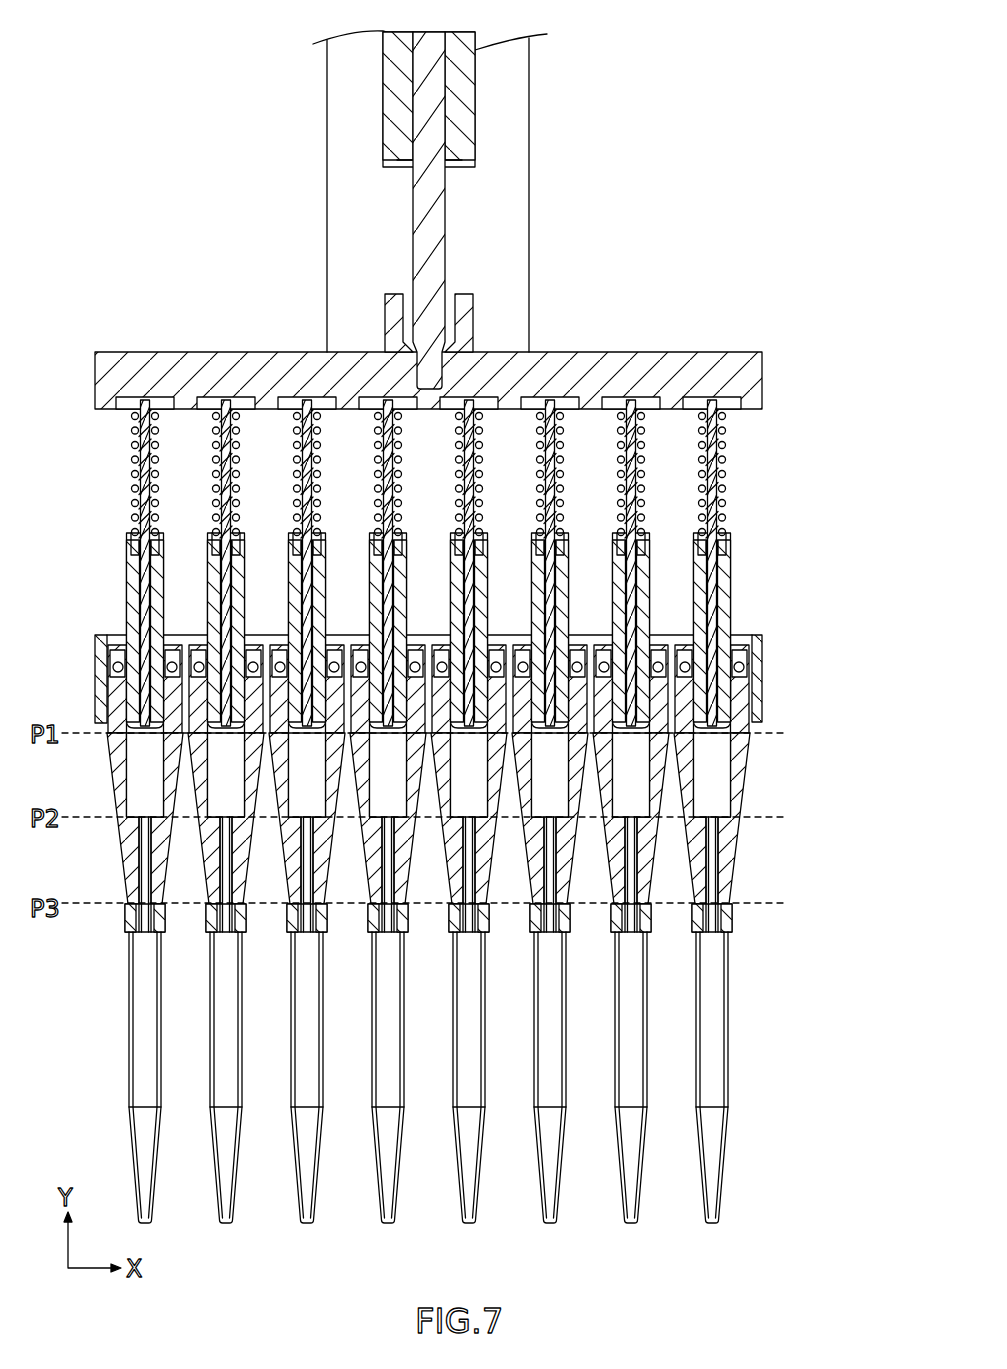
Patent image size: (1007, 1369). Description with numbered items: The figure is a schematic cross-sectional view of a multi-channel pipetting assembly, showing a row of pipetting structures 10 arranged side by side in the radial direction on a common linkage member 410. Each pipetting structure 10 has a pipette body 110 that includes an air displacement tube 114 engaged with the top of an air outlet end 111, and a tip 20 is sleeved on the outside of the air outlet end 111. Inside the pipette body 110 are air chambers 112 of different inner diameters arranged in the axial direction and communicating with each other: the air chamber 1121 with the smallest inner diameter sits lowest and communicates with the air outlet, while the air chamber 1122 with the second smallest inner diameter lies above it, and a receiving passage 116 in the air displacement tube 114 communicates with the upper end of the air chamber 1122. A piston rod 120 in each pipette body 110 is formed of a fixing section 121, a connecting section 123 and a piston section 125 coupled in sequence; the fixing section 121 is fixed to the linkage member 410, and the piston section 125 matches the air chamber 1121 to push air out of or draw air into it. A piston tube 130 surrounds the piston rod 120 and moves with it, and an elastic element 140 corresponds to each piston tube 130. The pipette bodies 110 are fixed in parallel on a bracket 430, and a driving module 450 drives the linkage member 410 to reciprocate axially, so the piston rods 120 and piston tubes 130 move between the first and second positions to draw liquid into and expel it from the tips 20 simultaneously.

The pipetting structure 10 is at (112, 773).
The tip 20 is at (130, 1008).
The pipette body 110 is at (815, 811).
The air outlet end 111 is at (795, 877).
The air chambers 112 is at (783, 818).
The air chamber with smallest inner diameter 1121 is at (716, 852).
The air chamber with second smallest inner diameter 1122 is at (713, 797).
The air displacement tube 114 is at (783, 818).
The receiving passage 116 is at (742, 689).
The piston rod 120 is at (427, 364).
The fixing section 121 is at (733, 403).
The connecting section 123 is at (713, 473).
The piston section 125 is at (713, 597).
The piston tube 130 is at (727, 567).
The elastic element 140 is at (723, 442).
The linkage member 410 is at (748, 372).
The bracket 430 is at (353, 201).
The driving module 450 is at (383, 128).